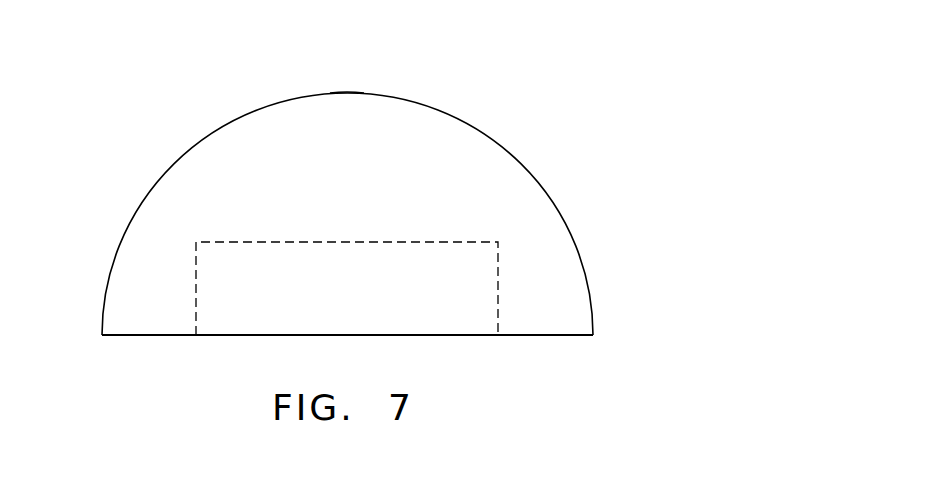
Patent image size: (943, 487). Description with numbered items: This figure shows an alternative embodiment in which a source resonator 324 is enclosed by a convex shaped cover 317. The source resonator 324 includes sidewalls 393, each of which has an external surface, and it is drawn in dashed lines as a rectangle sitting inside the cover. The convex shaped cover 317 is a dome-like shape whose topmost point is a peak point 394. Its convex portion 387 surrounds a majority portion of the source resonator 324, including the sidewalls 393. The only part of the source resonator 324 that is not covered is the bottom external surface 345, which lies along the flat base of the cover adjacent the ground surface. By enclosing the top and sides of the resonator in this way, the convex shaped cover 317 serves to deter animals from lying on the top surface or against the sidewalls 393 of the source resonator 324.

The convex shaped cover 317 is at (484, 131).
The source resonator 324 is at (499, 243).
The bottom external surface 345 is at (461, 335).
The convex portion 387 is at (237, 142).
The sidewalls 393 is at (196, 280).
The peak point 394 is at (362, 95).